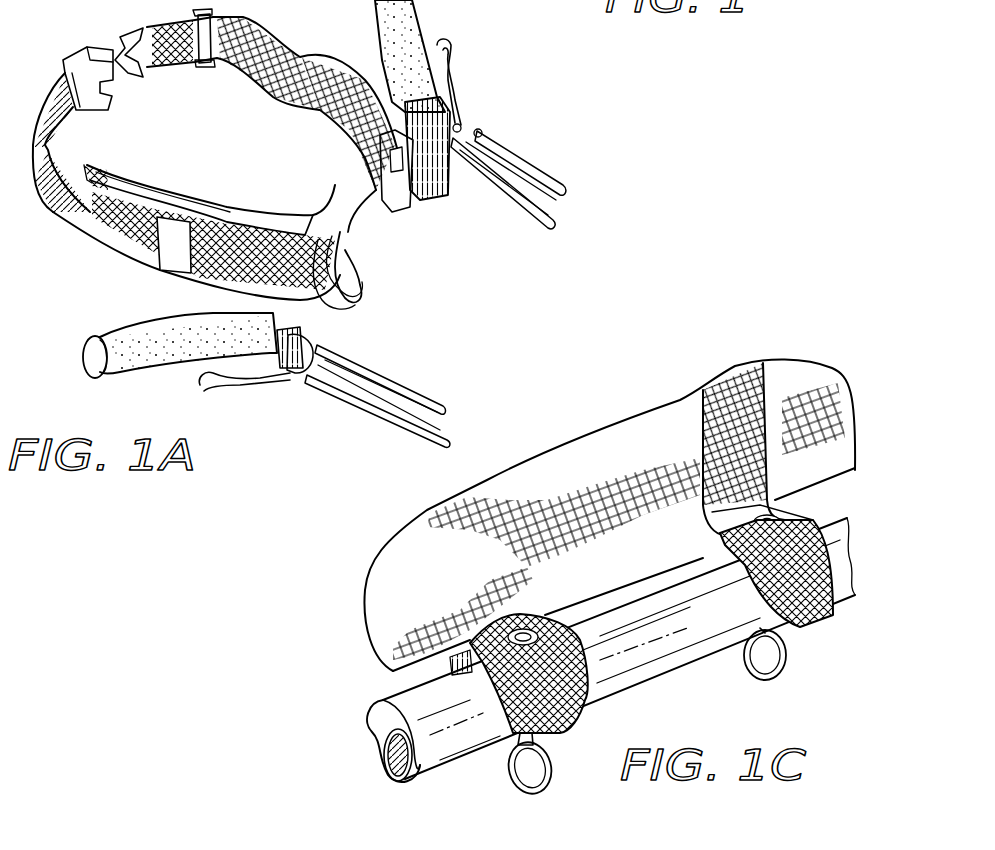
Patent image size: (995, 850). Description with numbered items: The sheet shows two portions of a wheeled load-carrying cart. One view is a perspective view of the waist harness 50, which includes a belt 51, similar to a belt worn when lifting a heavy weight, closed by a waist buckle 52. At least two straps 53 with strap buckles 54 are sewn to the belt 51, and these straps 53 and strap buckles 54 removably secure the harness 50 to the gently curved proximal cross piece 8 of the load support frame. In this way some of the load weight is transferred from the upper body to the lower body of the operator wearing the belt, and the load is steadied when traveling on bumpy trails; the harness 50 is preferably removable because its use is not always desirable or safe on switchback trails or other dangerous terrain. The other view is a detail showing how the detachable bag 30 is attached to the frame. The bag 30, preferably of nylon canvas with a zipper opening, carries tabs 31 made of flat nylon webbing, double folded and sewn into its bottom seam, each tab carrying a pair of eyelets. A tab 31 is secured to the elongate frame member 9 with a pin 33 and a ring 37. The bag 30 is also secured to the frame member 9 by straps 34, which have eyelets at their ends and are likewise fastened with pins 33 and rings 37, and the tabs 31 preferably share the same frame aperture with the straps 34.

In FIG. 1A, the waist harness 50 is at (139, 289).
In FIG. 1A, the belt 51 is at (342, 181).
In FIG. 1A, the waist buckle 52 is at (88, 48).
In FIG. 1A, the straps 53 is at (437, 205).
In FIG. 1A, the strap buckles 54 is at (333, 243).
In FIG. 1A, the proximal cross piece 8 is at (455, 190).
In FIG. 1C, the elongate frame member 9 is at (413, 701).
In FIG. 1C, the detachable bag 30 is at (637, 470).
In FIG. 1C, the tabs 31 is at (585, 708).
In FIG. 1C, the pins 33 is at (690, 556).
In FIG. 1C, the straps 34 is at (747, 370).
In FIG. 1C, the rings 37 is at (550, 760).